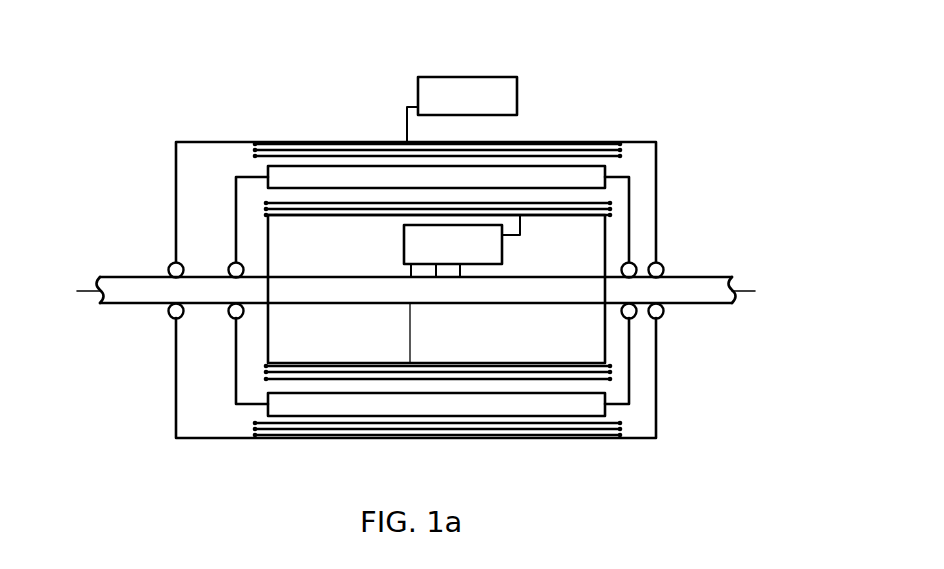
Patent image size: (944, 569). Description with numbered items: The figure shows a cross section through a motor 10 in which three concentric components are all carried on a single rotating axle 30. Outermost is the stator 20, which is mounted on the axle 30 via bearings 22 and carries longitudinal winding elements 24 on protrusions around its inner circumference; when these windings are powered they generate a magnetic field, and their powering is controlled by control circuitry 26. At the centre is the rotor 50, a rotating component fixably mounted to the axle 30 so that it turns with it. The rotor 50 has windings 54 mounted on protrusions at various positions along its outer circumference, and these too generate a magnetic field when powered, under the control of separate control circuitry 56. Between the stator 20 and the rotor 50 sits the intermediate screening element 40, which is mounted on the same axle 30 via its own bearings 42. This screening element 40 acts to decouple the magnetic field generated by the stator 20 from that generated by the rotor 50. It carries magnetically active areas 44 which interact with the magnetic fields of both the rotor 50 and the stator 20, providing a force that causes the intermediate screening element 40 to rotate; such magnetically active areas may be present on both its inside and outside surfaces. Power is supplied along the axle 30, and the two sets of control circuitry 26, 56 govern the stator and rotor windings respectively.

The motor 10 is at (676, 121).
The stator 20 is at (188, 142).
The bearings 22 is at (168, 312).
The winding elements 24 is at (275, 143).
The control circuitry 26 is at (503, 77).
The rotating axle 30 is at (123, 285).
The intermediate screening element 40 is at (622, 176).
The bearings 42 is at (220, 305).
The magnetically active areas 44 is at (563, 175).
The rotor 50 is at (593, 338).
The windings 54 is at (612, 203).
The control circuitry 56 is at (503, 245).